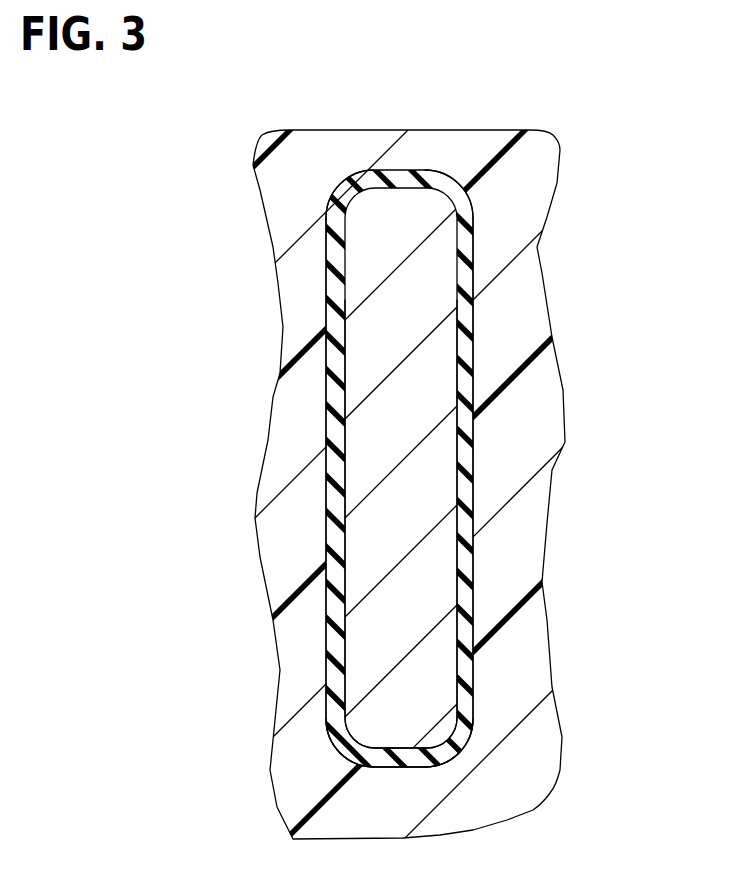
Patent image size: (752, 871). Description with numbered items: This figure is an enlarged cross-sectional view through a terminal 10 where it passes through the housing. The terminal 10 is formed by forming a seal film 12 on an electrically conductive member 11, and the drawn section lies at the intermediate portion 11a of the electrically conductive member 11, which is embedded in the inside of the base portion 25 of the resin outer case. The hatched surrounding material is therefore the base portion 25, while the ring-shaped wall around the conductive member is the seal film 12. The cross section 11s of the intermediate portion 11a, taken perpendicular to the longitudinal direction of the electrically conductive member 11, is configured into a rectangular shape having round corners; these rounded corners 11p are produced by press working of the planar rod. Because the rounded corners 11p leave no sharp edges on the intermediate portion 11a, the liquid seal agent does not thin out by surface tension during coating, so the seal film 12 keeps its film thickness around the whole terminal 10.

The terminal 10 is at (376, 456).
The electrically conductive member 11 is at (444, 408).
The seal film 12 is at (467, 423).
The intermediate portion 11a is at (380, 401).
The rounded corners 11p is at (350, 196).
The cross section 11s is at (432, 582).
The base portion 25 is at (288, 495).